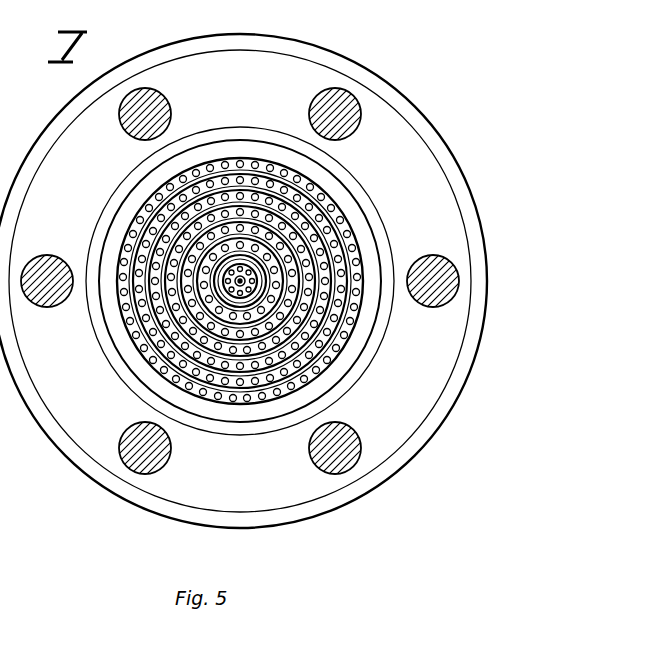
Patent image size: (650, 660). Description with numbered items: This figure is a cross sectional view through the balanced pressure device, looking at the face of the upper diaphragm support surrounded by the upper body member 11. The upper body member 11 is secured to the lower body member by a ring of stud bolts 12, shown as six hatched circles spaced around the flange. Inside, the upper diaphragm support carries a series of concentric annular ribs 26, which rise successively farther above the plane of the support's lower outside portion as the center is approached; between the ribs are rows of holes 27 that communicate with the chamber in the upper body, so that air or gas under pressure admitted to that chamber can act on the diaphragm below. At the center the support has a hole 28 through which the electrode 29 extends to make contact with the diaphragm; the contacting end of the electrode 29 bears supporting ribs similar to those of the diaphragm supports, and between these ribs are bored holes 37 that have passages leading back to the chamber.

The upper body member 11 is at (457, 337).
The stud bolts 12 is at (458, 273).
The annular ribs 26 is at (272, 255).
The holes 27 is at (318, 368).
The hole 28 is at (275, 243).
The electrode 29 is at (326, 353).
The bored holes 37 is at (332, 338).